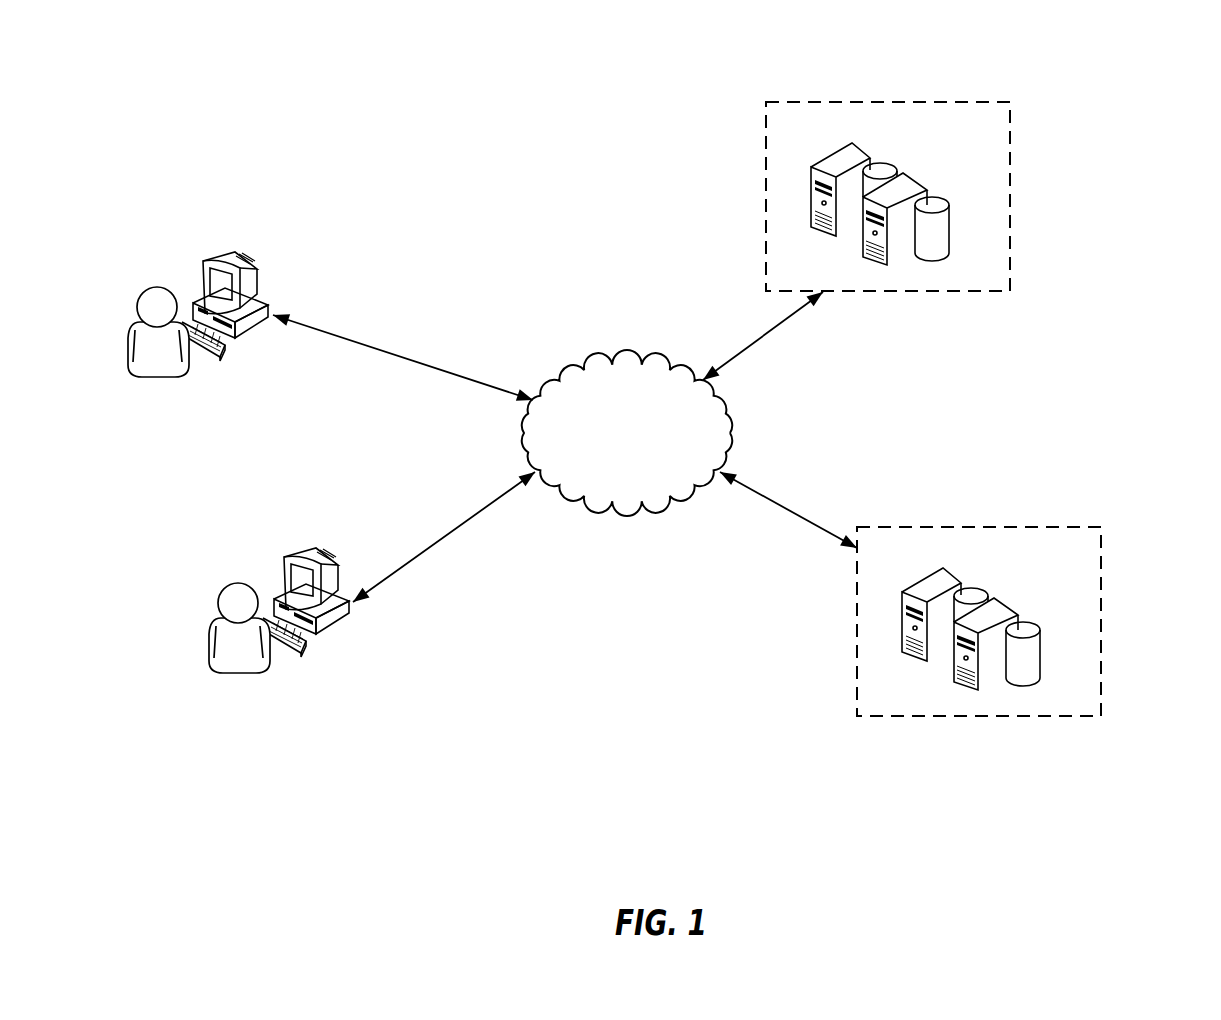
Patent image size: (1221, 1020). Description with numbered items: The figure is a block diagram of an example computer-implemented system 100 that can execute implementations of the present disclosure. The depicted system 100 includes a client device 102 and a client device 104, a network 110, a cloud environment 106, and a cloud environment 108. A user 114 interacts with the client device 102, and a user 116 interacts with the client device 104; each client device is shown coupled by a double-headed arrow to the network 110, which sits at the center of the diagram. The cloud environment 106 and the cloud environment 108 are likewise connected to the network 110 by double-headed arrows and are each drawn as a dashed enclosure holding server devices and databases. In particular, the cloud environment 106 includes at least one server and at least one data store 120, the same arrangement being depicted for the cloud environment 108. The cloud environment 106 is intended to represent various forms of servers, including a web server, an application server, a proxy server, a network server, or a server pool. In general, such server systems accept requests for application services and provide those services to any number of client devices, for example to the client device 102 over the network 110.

The computer-implemented system 100 is at (210, 72).
The client device 102 is at (208, 258).
The client device 104 is at (286, 575).
The cloud environment 106 is at (1010, 195).
The cloud environment 108 is at (1018, 621).
The network 110 is at (627, 364).
The user 114 is at (157, 377).
The user 116 is at (254, 657).
The data store 120 is at (897, 172).